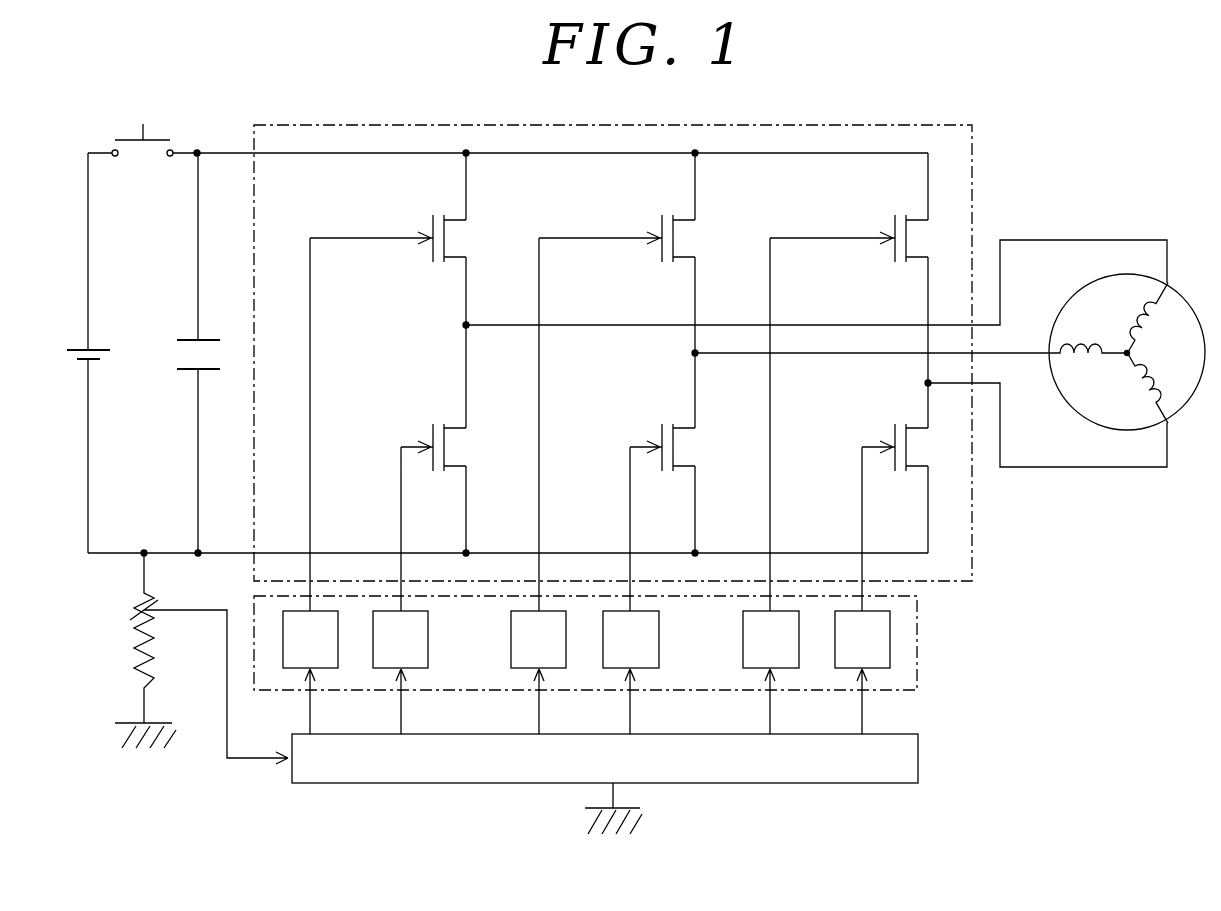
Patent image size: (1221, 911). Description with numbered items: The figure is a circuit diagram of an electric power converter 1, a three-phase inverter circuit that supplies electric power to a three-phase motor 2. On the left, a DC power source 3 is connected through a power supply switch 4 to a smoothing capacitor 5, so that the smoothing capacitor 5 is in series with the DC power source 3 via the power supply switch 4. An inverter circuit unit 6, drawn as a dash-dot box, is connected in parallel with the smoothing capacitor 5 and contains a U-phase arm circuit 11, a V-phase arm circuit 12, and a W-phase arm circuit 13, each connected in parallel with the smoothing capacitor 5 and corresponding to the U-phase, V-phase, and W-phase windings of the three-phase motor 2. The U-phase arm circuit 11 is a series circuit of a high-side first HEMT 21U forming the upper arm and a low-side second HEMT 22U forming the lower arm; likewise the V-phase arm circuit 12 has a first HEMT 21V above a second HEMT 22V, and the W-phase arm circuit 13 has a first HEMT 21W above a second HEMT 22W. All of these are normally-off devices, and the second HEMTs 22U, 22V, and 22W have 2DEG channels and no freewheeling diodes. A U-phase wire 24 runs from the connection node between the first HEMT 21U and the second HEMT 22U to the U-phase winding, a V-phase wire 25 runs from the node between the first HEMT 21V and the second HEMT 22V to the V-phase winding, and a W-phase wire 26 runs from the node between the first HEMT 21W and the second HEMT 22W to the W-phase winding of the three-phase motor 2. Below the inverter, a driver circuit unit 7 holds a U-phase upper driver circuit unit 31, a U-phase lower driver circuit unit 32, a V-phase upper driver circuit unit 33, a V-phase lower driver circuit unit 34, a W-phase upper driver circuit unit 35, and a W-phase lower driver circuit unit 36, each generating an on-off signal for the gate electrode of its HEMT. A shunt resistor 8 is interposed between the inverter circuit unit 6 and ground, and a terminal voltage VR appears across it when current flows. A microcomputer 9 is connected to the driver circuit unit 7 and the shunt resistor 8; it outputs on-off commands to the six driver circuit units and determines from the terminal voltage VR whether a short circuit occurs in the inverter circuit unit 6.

The electric power converter 1 is at (627, 494).
The three-phase motor 2 is at (1196, 316).
The DC power source 3 is at (82, 358).
The power supply switch 4 is at (160, 140).
The smoothing capacitor 5 is at (190, 369).
The inverter circuit unit 6 is at (650, 367).
The driver circuit unit 7 is at (632, 665).
The shunt resistor 8 is at (135, 660).
The microcomputer 9 is at (920, 755).
The U-phase arm circuit 11 is at (466, 176).
The V-phase arm circuit 12 is at (695, 178).
The W-phase arm circuit 13 is at (928, 178).
The first HEMT 21U is at (432, 255).
The first HEMT 21V is at (661, 255).
The first HEMT 21W is at (894, 255).
The second HEMT 22U is at (432, 430).
The second HEMT 22V is at (661, 430).
The second HEMT 22W is at (894, 430).
The U-phase wire 24 is at (602, 328).
The V-phase wire 25 is at (738, 356).
The W-phase wire 26 is at (948, 386).
The U-phase upper driver circuit unit 31 is at (295, 669).
The U-phase lower driver circuit unit 32 is at (385, 669).
The V-phase upper driver circuit unit 33 is at (523, 669).
The V-phase lower driver circuit unit 34 is at (614, 669).
The W-phase upper driver circuit unit 35 is at (755, 669).
The W-phase lower driver circuit unit 36 is at (847, 669).